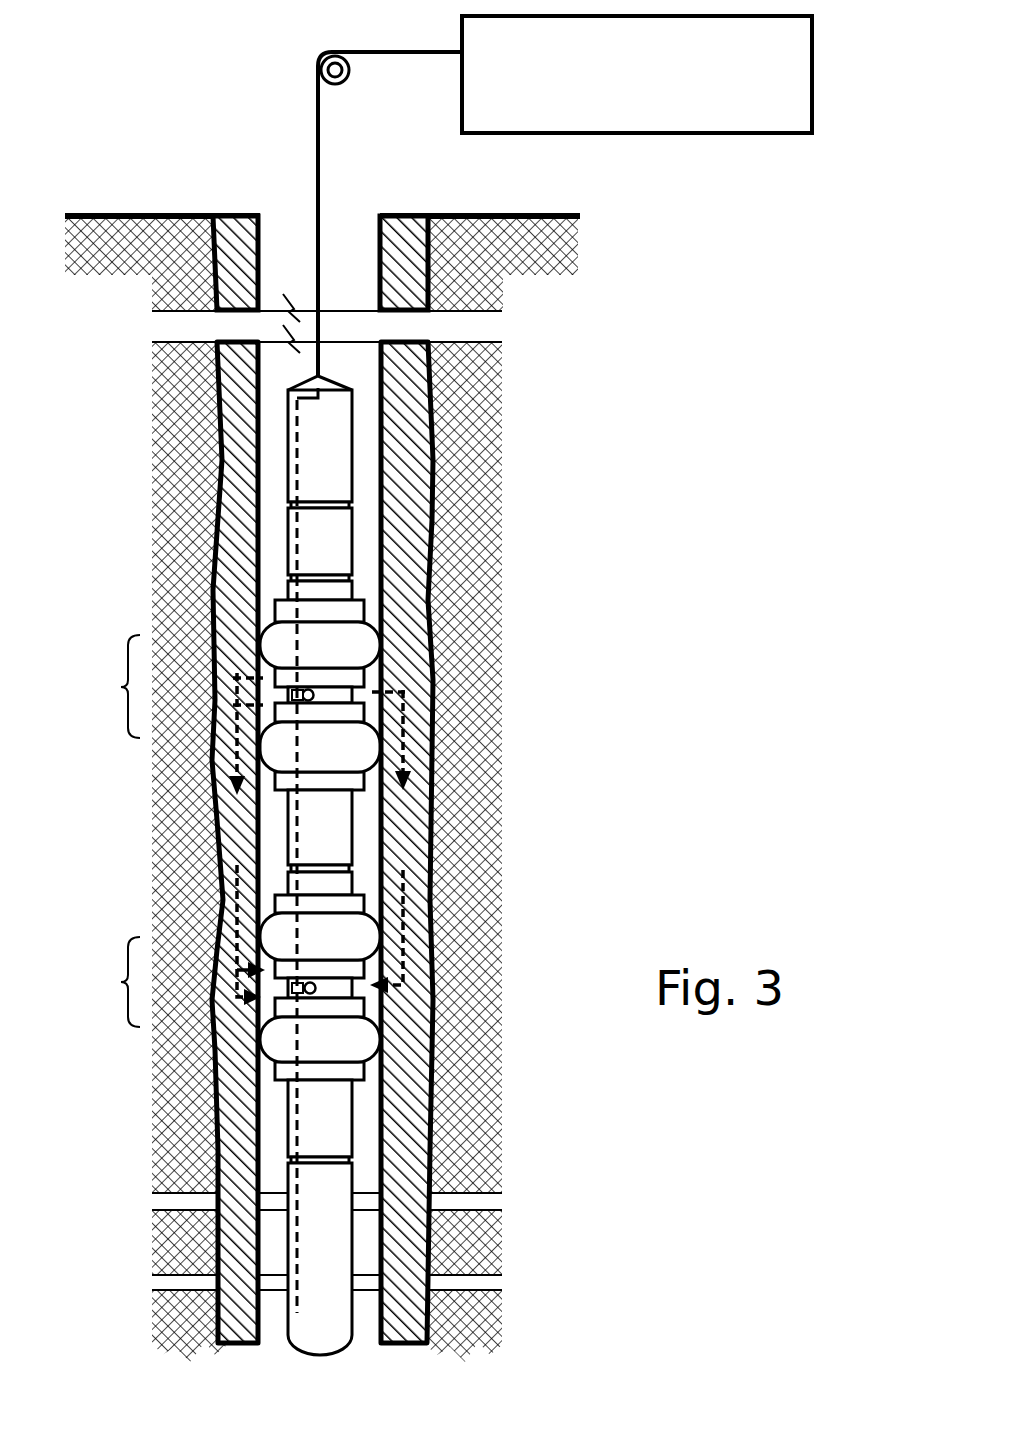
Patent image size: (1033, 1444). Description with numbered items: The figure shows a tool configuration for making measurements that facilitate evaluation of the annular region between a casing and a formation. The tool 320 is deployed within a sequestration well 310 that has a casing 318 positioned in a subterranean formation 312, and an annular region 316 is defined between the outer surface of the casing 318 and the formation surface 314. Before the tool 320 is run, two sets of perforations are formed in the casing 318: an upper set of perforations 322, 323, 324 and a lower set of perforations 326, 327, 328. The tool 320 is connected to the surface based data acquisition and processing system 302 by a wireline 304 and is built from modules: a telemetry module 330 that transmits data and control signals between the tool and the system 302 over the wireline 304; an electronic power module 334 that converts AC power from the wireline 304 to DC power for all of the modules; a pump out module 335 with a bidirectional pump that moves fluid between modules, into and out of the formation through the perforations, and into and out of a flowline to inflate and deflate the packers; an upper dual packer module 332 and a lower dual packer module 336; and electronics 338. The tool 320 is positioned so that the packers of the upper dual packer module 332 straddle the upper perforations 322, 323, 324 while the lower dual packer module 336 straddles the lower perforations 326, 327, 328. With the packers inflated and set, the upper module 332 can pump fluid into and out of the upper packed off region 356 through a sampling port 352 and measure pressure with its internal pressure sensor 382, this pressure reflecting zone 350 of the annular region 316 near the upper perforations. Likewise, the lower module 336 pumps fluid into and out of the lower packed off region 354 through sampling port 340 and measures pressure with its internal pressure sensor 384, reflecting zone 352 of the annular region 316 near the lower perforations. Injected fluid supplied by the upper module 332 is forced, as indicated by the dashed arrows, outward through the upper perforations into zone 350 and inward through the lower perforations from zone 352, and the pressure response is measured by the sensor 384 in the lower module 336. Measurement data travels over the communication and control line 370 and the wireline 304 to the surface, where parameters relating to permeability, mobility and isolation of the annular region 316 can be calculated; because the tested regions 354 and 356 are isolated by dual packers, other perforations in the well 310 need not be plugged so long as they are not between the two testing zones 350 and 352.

The data acquisition and processing system 302 is at (515, 124).
The wireline 304 is at (318, 148).
The sequestration well 310 is at (311, 266).
The subterranean formation 312 is at (497, 400).
The formation surface 314 is at (435, 462).
The annular region 316 is at (237, 462).
The casing 318 is at (392, 512).
The tool 320 is at (270, 456).
The perforation 322 is at (296, 694).
The perforation 323 is at (385, 690).
The perforation 324 is at (226, 757).
The perforation 326 is at (223, 931).
The perforation 327 is at (398, 952).
The perforation 328 is at (292, 988).
The telemetry module 330 is at (349, 472).
The upper dual packer module 332 is at (365, 655).
The electronic power module 334 is at (349, 543).
The pump out module 335 is at (349, 837).
The lower dual packer module 336 is at (365, 948).
The electronics 338 is at (349, 1244).
The sampling port 340 is at (265, 1053).
The zone 350 is at (105, 686).
The zone 352 is at (206, 549).
The lower packed off region 354 is at (372, 995).
The upper packed off region 356 is at (406, 712).
The communication and control line 370 is at (295, 1120).
The pressure sensor 382 is at (310, 701).
The pressure sensor 384 is at (317, 989).